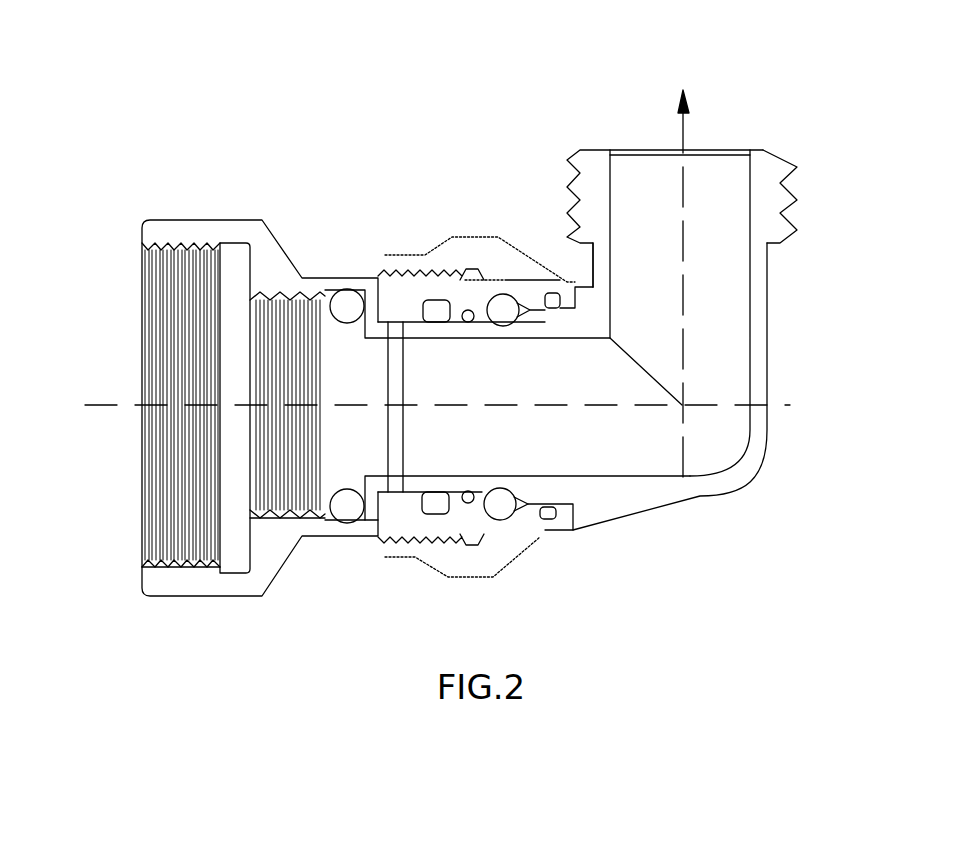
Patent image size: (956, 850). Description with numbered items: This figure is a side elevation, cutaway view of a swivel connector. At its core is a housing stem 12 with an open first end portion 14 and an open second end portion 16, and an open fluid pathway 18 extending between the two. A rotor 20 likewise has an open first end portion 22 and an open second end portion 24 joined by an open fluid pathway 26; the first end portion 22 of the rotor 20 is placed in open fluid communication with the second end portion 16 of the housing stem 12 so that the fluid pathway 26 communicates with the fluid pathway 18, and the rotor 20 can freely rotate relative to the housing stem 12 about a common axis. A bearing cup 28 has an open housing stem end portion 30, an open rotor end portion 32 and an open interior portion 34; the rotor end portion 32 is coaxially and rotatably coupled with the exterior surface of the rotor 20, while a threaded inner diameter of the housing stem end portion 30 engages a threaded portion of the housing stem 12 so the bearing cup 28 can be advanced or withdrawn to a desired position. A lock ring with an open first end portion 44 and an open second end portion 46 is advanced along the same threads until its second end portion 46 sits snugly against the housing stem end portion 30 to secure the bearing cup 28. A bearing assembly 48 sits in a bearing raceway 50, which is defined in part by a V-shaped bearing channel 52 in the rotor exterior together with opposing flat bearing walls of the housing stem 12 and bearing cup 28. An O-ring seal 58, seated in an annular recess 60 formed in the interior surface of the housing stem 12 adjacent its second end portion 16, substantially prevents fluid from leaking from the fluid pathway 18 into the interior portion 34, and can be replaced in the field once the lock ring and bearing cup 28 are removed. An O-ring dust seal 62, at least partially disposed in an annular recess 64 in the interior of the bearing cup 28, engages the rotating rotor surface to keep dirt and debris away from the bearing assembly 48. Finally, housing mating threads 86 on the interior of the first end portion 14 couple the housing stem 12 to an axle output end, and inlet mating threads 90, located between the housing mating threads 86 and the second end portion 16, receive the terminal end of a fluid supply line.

The housing stem 12 is at (324, 541).
The first end portion 14 is at (152, 216).
The second end portion 16 is at (456, 521).
The fluid pathway 18 is at (88, 409).
The rotor 20 is at (766, 350).
The first end portion 22 is at (414, 318).
The second end portion 24 is at (770, 146).
The fluid pathway 26 is at (692, 117).
The bearing cup 28 is at (470, 247).
The housing stem end portion 30 is at (465, 250).
The rotor end portion 32 is at (564, 282).
The interior portion 34 is at (511, 277).
The first end portion 44 is at (378, 550).
The second end portion 46 is at (428, 550).
The bearing assembly 48 is at (502, 519).
The bearing raceway 50 is at (478, 322).
The bearing channel 52 is at (493, 502).
The O-ring seal 58 is at (438, 298).
The annular recess 60 is at (450, 330).
The O-ring dust seal 62 is at (548, 521).
The annular recess 64 is at (548, 314).
The housing mating threads 86 is at (165, 583).
The inlet mating threads 90 is at (274, 527).